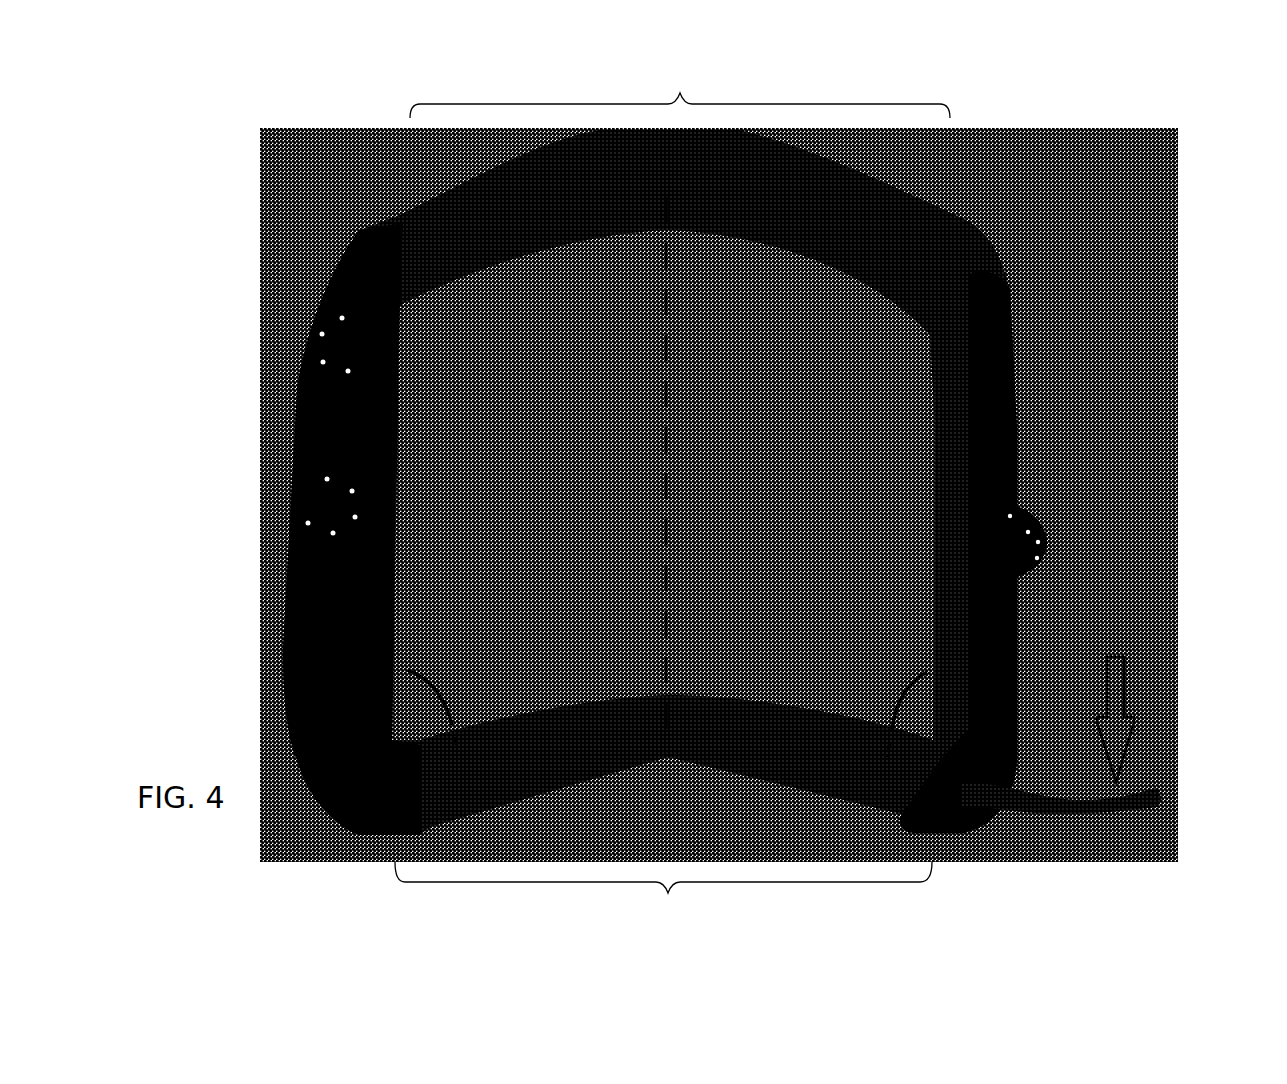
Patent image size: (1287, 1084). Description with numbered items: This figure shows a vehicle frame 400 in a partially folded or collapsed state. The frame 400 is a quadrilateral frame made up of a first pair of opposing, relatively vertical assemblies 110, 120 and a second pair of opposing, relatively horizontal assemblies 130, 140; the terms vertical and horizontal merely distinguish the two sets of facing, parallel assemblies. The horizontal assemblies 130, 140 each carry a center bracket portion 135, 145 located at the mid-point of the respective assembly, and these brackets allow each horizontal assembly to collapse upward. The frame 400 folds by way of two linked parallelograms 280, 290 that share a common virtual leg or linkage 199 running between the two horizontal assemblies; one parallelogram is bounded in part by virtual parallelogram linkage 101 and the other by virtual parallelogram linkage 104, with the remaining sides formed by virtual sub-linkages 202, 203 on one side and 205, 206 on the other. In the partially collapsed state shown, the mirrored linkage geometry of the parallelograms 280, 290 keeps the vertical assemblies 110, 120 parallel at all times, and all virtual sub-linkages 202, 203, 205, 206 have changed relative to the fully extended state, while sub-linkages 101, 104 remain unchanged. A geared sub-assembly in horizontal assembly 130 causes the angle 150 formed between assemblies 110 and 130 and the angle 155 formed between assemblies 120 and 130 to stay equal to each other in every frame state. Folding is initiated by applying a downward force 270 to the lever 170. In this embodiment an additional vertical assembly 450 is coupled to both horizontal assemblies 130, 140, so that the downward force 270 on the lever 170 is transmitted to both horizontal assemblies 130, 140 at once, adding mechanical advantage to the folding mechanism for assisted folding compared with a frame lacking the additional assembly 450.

The frame 400 is at (720, 499).
The vertical assembly 110 is at (320, 288).
The virtual parallelogram linkage 101 is at (290, 506).
The virtual parallelogram linkage 104 is at (1010, 367).
The vertical assembly 120 is at (1030, 522).
The additional vertical assembly 450 is at (1013, 422).
The horizontal assembly 140 is at (680, 91).
The center bracket portion 145 is at (790, 160).
The virtual leg 199 is at (662, 300).
The virtual sub-linkage 202 is at (398, 211).
The virtual sub-linkage 205 is at (947, 221).
The virtual sub-linkage 203 is at (378, 830).
The virtual sub-linkage 206 is at (934, 833).
The horizontal assembly 130 is at (663, 898).
The center bracket portion 135 is at (691, 767).
The angle 150 is at (448, 702).
The angle 155 is at (898, 700).
The parallelogram 280 is at (488, 623).
The parallelogram 290 is at (917, 592).
The lever 170 is at (1162, 797).
The downward force 270 is at (1135, 717).